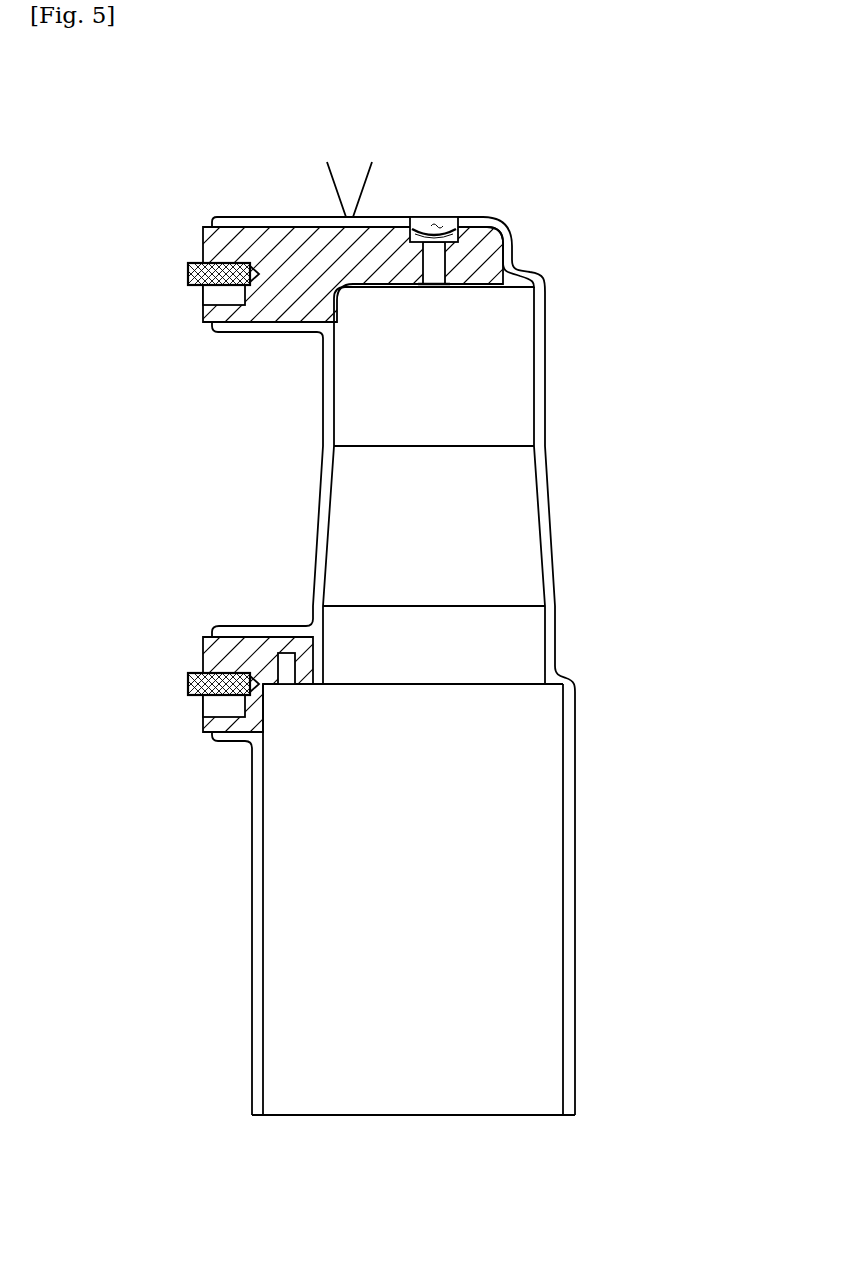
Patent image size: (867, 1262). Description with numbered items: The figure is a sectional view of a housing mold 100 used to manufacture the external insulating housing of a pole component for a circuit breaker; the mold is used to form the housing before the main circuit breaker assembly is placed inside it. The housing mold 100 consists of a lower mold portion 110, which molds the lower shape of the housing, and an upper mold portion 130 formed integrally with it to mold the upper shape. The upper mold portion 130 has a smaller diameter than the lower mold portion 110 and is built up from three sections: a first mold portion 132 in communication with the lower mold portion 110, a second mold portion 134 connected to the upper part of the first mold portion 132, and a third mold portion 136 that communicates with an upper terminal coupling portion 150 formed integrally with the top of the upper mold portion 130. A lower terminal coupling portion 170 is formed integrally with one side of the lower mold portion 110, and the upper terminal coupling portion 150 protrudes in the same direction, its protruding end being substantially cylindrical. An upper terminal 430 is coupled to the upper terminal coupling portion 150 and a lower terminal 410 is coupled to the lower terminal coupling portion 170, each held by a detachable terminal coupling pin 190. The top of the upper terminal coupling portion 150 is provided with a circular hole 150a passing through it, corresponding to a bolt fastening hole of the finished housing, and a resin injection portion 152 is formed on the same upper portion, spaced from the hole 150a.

The housing mold 100 is at (623, 88).
The lower mold portion 110 is at (575, 887).
The upper mold portion 130 is at (512, 489).
The first mold portion 132 is at (480, 649).
The second mold portion 134 is at (543, 513).
The third mold portion 136 is at (538, 355).
The upper terminal coupling portion 150 is at (260, 328).
The circular hole 150a is at (433, 222).
The resin injection portion 152 is at (333, 180).
The lower terminal coupling portion 170 is at (262, 630).
The terminal coupling pin 190 is at (188, 273).
The lower terminal 410 is at (228, 655).
The upper terminal 430 is at (228, 243).